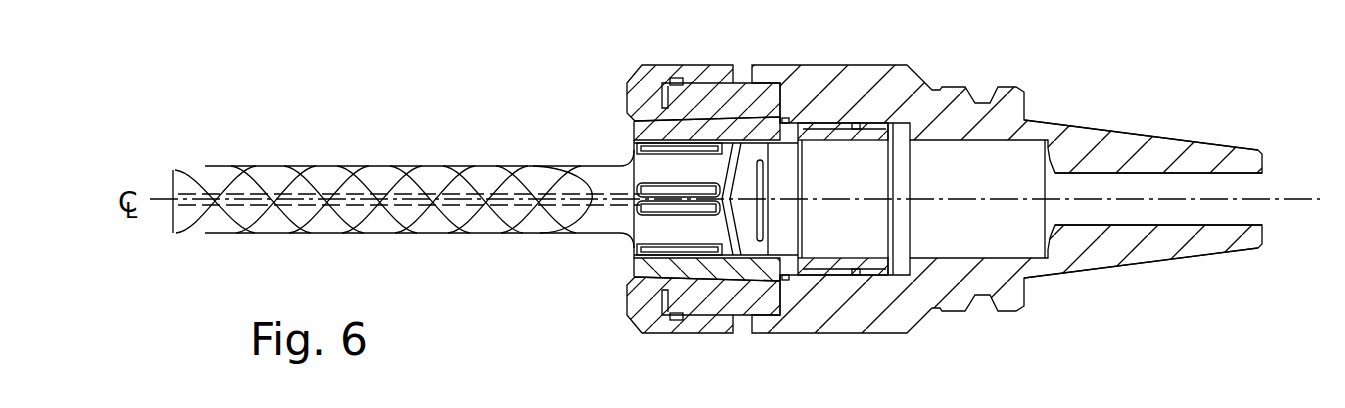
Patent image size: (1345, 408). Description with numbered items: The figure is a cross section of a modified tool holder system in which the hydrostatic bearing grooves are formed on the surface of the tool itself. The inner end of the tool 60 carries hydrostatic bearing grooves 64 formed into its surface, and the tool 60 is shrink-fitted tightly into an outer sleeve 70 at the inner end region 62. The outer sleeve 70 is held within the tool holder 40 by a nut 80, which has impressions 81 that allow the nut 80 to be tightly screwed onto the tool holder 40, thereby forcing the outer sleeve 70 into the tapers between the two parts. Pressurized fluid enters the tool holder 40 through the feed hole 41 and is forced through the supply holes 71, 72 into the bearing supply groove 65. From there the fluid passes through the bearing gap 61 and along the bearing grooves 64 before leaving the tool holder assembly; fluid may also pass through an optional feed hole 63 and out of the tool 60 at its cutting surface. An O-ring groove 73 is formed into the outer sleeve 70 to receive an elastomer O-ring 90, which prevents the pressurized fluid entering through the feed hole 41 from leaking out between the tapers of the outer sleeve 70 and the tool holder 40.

The tool holder 40 is at (1120, 147).
The feed hole 41 is at (1242, 185).
The tool 60 is at (385, 185).
The bearing gap 61 is at (660, 258).
The inner end region 62 is at (855, 276).
The optional feed hole 63 is at (880, 205).
The hydrostatic bearing grooves 64 is at (660, 187).
The bearing supply groove 65 is at (778, 117).
The outer sleeve 70 is at (838, 268).
The supply hole 71 is at (854, 127).
The supply hole 72 is at (821, 122).
The O-ring groove 73 is at (800, 282).
The nut 80 is at (706, 64).
The impressions 81 is at (665, 64).
The elastomer O-ring 90 is at (785, 282).